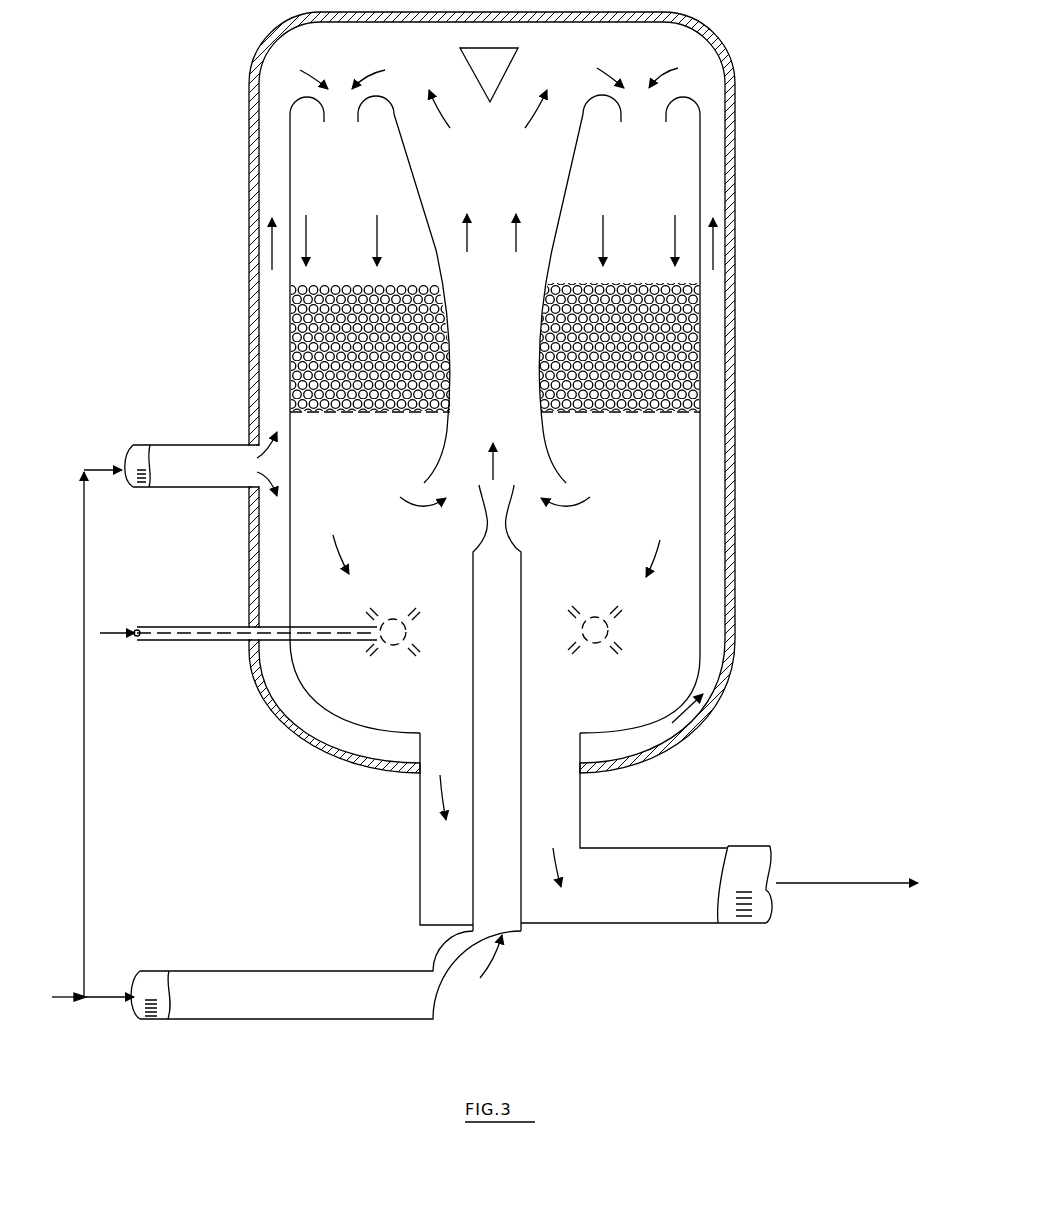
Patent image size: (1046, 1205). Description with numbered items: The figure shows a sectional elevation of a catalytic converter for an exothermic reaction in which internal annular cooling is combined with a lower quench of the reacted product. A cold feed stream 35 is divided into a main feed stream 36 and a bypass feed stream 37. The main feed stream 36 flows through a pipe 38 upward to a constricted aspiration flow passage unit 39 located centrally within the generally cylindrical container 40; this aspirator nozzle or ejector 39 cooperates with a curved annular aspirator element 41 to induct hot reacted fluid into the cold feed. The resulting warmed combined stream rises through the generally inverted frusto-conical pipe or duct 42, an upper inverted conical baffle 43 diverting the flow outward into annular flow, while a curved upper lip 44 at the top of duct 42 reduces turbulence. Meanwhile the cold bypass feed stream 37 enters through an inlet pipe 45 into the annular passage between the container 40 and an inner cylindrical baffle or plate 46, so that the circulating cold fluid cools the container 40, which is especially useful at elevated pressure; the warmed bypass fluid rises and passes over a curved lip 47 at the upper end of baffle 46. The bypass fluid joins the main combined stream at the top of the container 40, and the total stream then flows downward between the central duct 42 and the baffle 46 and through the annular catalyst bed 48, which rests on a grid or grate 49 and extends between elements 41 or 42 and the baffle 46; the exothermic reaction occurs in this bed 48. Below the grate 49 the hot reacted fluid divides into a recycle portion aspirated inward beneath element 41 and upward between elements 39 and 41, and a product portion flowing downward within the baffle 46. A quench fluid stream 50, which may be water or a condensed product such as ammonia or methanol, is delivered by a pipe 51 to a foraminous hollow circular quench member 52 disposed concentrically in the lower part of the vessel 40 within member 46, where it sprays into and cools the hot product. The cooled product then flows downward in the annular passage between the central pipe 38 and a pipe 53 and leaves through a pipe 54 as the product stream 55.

The cold feed stream 35 is at (55, 1002).
The main feed stream 36 is at (98, 998).
The bypass feed stream 37 is at (85, 816).
The pipe 38 is at (290, 975).
The constricted aspiration flow passage unit 39 is at (506, 507).
The container 40 is at (249, 252).
The curved annular aspirator element 41 is at (441, 462).
The inverted frusto-conical pipe or duct 42 is at (420, 185).
The upper inverted conical baffle 43 is at (519, 50).
The curved upper lip 44 is at (370, 114).
The inlet pipe 45 is at (138, 488).
The inner cylindrical baffle or plate 46 is at (291, 181).
The curved lip 47 is at (324, 118).
The annular catalyst bed 48 is at (328, 289).
The grid or grate 49 is at (359, 413).
The quench fluid stream 50 is at (124, 641).
The pipe 51 is at (170, 641).
The foraminous hollow circular quench member 52 is at (410, 623).
The pipe 53 is at (581, 812).
The pipe 54 is at (724, 926).
The product stream 55 is at (818, 886).